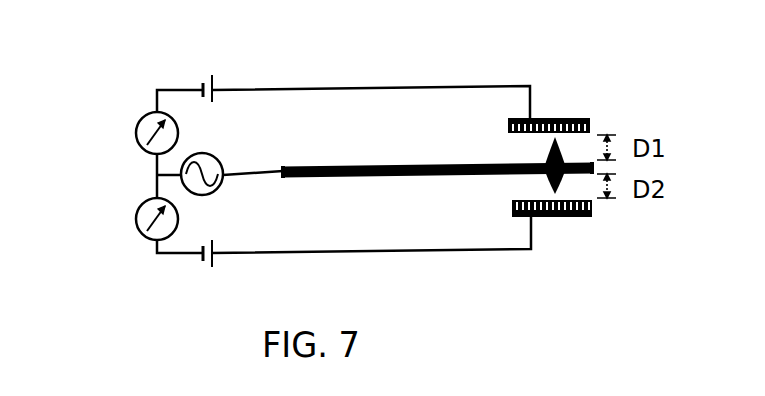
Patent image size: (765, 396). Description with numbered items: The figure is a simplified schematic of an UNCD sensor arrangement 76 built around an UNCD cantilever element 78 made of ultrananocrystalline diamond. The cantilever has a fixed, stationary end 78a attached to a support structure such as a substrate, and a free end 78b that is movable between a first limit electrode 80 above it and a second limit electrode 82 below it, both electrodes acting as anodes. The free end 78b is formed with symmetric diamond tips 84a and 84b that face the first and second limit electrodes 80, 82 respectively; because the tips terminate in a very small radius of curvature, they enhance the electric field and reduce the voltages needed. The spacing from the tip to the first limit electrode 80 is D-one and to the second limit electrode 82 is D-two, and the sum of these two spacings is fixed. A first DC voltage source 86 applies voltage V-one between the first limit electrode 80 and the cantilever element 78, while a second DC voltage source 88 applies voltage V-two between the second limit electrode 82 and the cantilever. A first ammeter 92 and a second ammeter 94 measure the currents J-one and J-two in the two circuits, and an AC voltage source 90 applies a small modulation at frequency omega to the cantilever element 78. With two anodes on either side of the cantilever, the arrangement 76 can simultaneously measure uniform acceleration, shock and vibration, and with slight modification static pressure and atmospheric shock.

The UNCD sensor arrangement 76 is at (516, 276).
The UNCD cantilever element 78 is at (422, 165).
The fixed end 78a is at (283, 166).
The free end 78b is at (590, 160).
The first limit electrode 80 is at (562, 117).
The second limit electrode 82 is at (568, 217).
The diamond tip 84a is at (530, 152).
The diamond tip 84b is at (560, 183).
The first DC voltage source 86 is at (213, 78).
The second DC voltage source 88 is at (195, 263).
The AC voltage source 90 is at (211, 154).
The first ammeter 92 is at (148, 112).
The second ammeter 94 is at (143, 203).